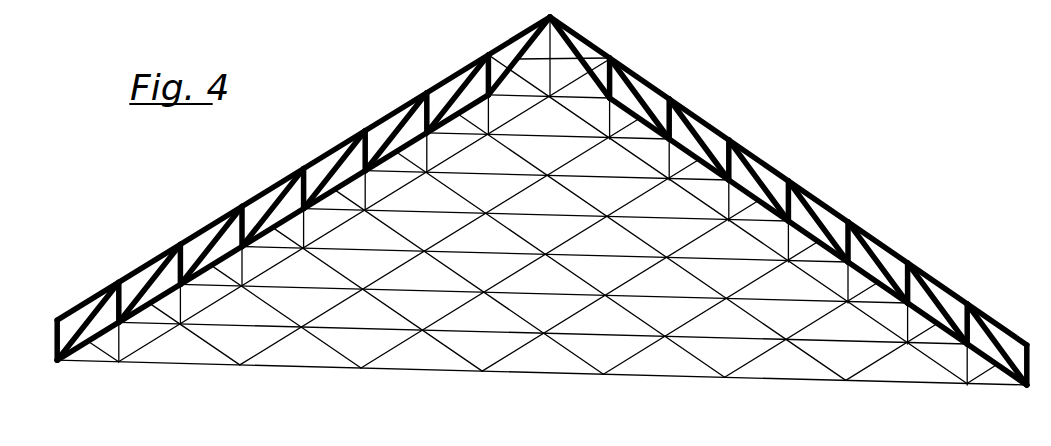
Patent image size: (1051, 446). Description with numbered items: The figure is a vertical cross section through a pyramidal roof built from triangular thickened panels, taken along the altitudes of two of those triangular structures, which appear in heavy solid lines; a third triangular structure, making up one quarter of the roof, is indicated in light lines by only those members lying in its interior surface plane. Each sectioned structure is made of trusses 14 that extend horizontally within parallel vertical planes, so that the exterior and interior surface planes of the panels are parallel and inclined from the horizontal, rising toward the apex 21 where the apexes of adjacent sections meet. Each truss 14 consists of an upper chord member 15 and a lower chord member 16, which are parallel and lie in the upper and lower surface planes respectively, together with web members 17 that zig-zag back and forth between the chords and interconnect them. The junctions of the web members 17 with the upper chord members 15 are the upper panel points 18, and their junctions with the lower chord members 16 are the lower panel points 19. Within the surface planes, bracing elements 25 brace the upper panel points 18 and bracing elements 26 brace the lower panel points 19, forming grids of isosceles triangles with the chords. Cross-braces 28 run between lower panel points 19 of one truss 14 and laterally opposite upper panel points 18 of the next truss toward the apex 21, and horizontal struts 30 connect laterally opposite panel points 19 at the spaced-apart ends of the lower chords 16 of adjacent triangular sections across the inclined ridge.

The truss 14 is at (407, 106).
The upper chord member 15 is at (543, 61).
The lower chord member 16 is at (518, 100).
The web member 17 is at (540, 87).
The upper panel point 18 is at (612, 57).
The lower panel point 19 is at (607, 99).
The apex 21 is at (503, 45).
The bracing element 25 is at (584, 36).
The bracing element 26 is at (503, 196).
The cross-brace 28 is at (554, 84).
The strut 30 is at (636, 139).